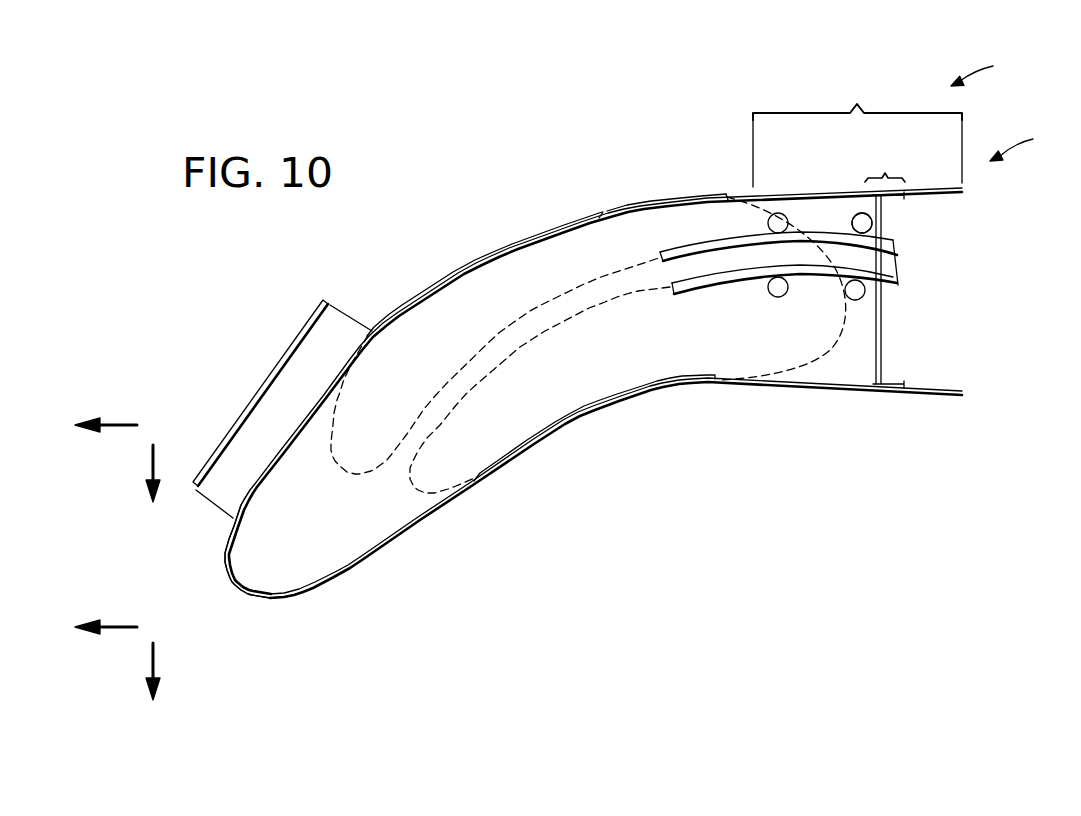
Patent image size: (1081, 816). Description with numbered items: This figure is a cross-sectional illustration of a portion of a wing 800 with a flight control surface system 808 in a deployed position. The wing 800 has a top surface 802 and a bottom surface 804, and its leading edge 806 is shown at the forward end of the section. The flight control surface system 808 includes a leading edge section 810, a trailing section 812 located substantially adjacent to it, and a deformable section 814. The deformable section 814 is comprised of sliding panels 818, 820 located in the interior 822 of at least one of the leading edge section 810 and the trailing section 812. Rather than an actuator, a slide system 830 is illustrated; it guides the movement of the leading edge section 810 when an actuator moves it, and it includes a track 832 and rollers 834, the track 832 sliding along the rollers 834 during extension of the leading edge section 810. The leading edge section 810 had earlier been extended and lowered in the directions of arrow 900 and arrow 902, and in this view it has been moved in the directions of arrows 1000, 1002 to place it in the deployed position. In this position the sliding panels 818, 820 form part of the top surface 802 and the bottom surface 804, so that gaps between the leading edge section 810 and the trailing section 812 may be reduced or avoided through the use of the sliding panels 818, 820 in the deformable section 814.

The wing 800 is at (984, 59).
The top surface 802 is at (547, 233).
The bottom surface 804 is at (393, 543).
The leading edge 806 is at (227, 575).
The flight control surface system 808 is at (1023, 134).
The leading edge section 810 is at (263, 394).
The trailing section 812 is at (857, 127).
The deformable section 814 is at (885, 261).
The sliding panel 818 is at (673, 195).
The sliding panel 820 is at (530, 450).
The interior 822 is at (338, 535).
The slide system 830 is at (900, 263).
The track 832 is at (897, 287).
The rollers 834 is at (870, 213).
The arrow 900 is at (122, 425).
The arrow 902 is at (151, 465).
The arrow 1000 is at (122, 627).
The arrow 1002 is at (151, 665).